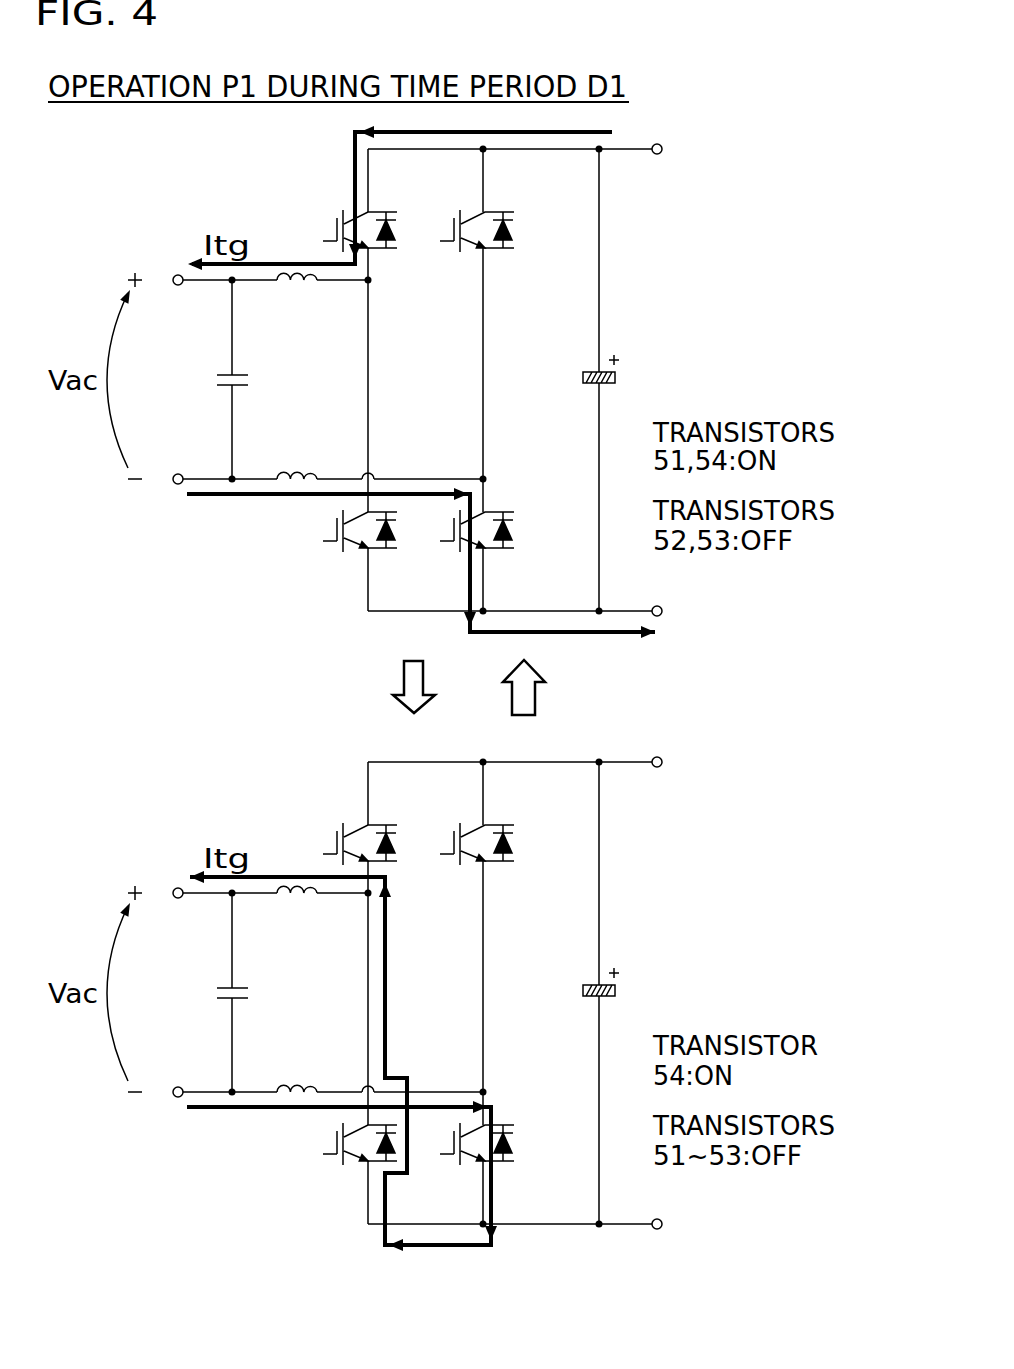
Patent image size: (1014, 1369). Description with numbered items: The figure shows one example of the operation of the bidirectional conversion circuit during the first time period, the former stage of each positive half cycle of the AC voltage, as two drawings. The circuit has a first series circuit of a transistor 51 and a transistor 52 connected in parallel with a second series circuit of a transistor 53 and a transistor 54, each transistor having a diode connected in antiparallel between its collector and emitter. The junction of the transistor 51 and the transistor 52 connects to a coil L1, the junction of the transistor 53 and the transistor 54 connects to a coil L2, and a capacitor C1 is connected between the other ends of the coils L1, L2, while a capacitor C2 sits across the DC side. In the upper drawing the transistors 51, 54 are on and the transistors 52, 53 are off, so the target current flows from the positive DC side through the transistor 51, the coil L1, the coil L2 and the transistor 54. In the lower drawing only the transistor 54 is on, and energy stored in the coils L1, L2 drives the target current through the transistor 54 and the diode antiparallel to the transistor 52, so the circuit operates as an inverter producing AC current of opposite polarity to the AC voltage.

The transistor 51 is at (338, 209).
The transistor 52 is at (337, 555).
The transistor 53 is at (455, 209).
The transistor 54 is at (454, 555).
The coil L1 is at (296, 288).
The coil L2 is at (297, 470).
The capacitor C1 is at (213, 379).
The capacitor C2 is at (585, 365).